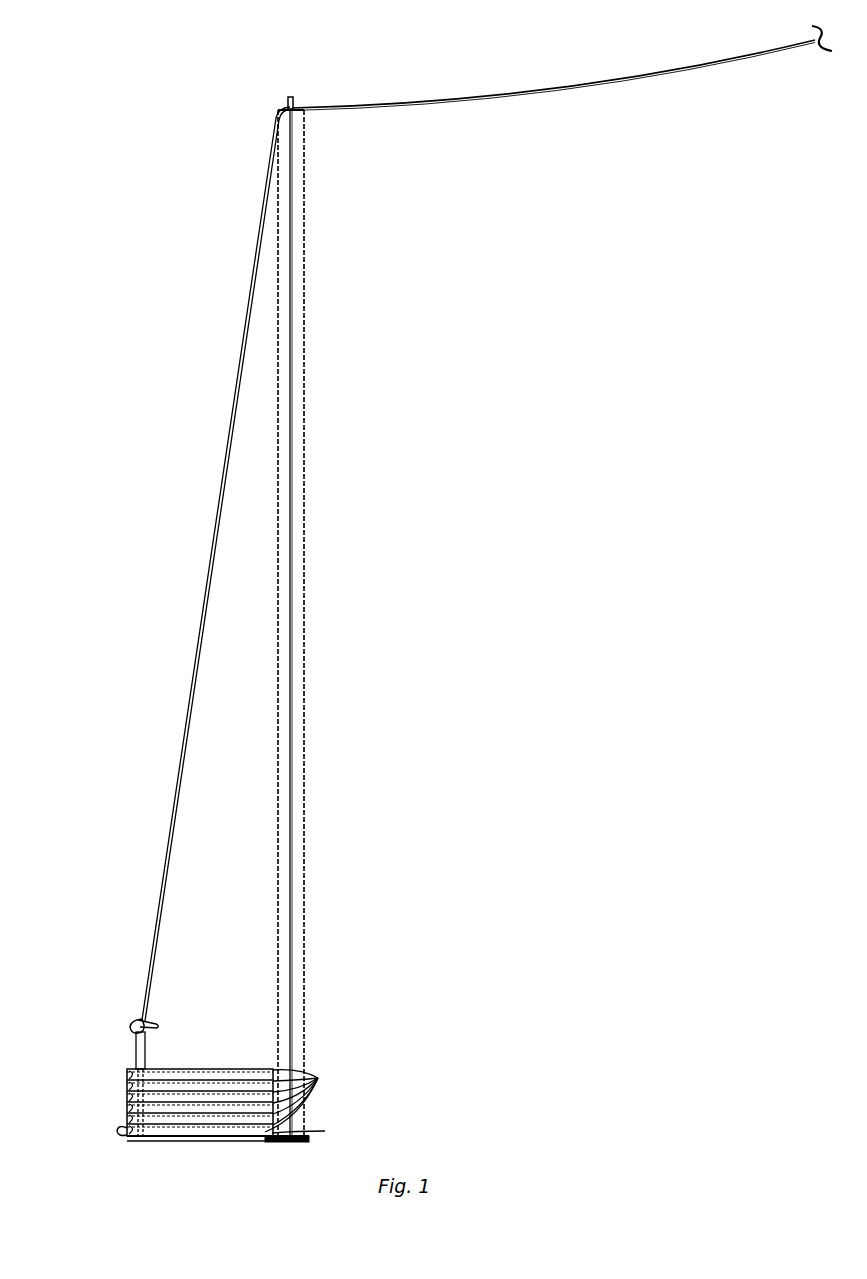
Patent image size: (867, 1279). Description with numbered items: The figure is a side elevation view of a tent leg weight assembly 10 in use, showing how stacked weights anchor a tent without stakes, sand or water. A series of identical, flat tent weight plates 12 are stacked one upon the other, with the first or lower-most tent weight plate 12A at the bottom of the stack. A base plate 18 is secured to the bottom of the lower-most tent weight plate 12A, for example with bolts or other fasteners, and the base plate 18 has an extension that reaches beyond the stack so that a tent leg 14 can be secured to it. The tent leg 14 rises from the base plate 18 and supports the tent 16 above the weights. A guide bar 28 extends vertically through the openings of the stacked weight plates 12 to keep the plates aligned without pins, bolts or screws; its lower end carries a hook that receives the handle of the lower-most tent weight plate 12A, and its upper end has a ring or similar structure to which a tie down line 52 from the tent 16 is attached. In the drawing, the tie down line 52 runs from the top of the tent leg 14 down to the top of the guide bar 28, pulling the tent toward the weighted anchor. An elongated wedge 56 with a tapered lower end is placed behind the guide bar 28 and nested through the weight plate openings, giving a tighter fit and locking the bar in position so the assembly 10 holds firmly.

The tent leg weight assembly 10 is at (100, 1090).
The tent weight plates 12 is at (307, 1101).
The lower-most tent weight plate 12A is at (318, 1131).
The tent leg 14 is at (300, 409).
The tent 16 is at (505, 97).
The base plate 18 is at (158, 1144).
The guide bar 28 is at (134, 1052).
The tie down line 52 is at (236, 390).
The wedge 56 is at (148, 1052).